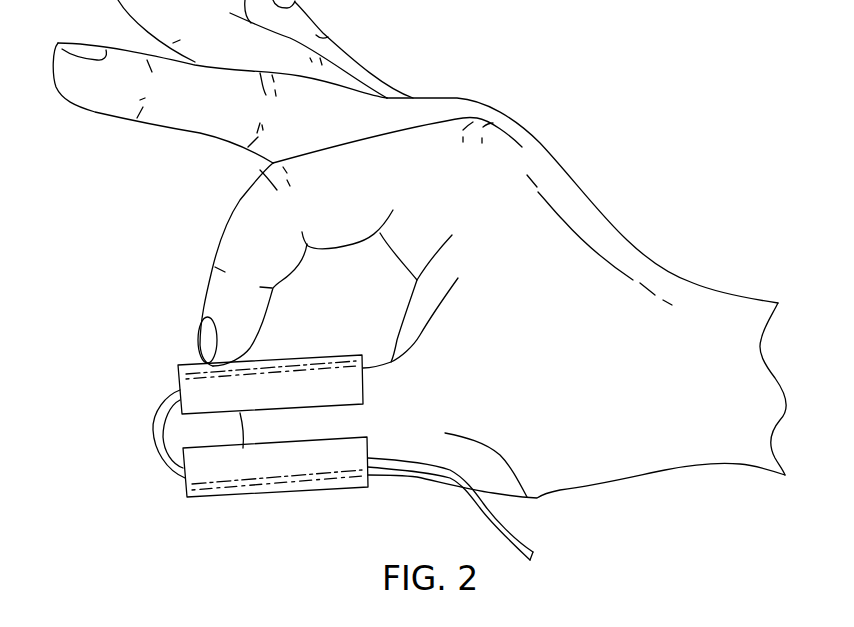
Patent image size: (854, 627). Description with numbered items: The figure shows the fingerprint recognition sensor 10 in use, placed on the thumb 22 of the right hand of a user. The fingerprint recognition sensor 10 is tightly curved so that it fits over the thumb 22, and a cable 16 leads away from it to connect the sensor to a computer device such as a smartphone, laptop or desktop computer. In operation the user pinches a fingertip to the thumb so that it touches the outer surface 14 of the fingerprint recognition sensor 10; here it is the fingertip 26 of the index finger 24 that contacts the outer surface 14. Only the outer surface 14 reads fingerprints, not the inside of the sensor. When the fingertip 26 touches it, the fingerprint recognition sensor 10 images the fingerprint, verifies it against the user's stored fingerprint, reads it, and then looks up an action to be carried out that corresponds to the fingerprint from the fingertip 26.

The fingerprint recognition sensor 10 is at (240, 459).
The outside 14 is at (188, 392).
The cable 16 is at (485, 515).
The thumb 22 is at (527, 497).
The index finger 24 is at (257, 213).
The fingertip 26 is at (238, 330).